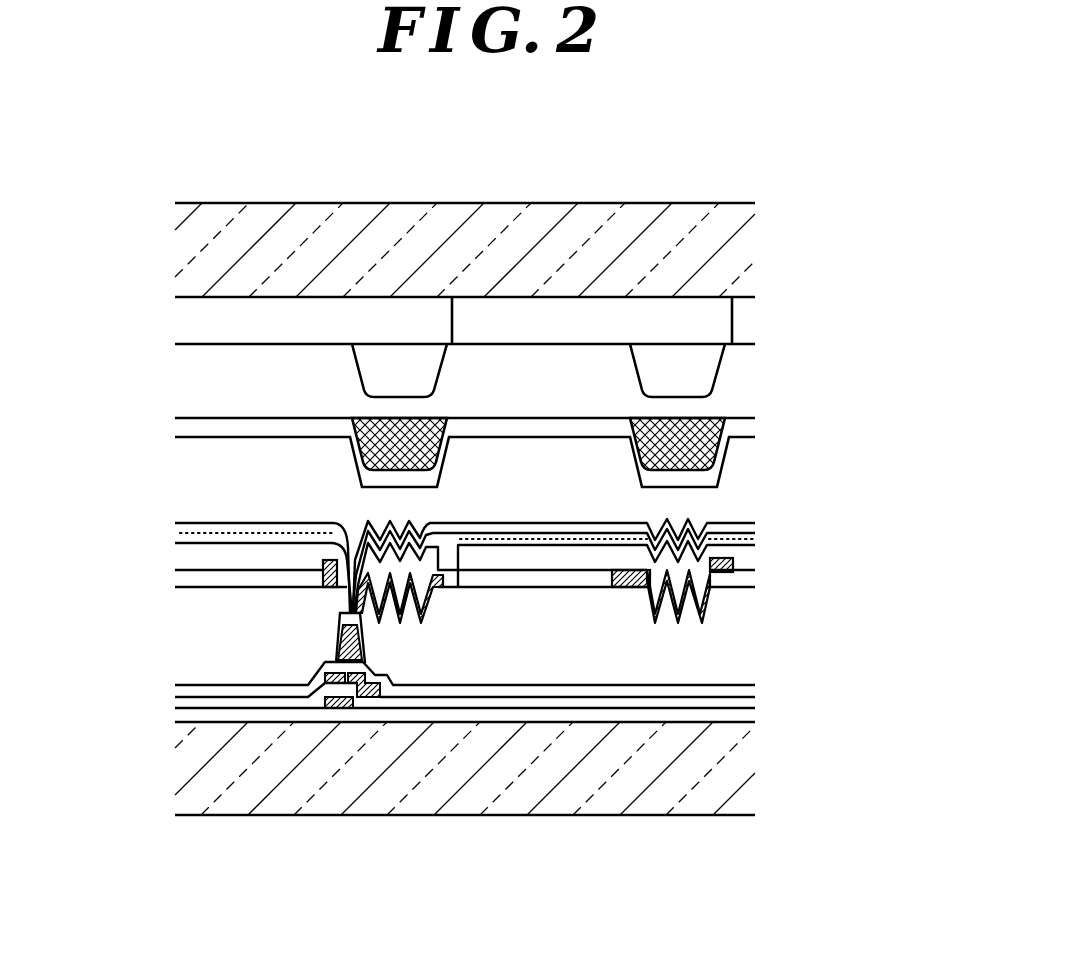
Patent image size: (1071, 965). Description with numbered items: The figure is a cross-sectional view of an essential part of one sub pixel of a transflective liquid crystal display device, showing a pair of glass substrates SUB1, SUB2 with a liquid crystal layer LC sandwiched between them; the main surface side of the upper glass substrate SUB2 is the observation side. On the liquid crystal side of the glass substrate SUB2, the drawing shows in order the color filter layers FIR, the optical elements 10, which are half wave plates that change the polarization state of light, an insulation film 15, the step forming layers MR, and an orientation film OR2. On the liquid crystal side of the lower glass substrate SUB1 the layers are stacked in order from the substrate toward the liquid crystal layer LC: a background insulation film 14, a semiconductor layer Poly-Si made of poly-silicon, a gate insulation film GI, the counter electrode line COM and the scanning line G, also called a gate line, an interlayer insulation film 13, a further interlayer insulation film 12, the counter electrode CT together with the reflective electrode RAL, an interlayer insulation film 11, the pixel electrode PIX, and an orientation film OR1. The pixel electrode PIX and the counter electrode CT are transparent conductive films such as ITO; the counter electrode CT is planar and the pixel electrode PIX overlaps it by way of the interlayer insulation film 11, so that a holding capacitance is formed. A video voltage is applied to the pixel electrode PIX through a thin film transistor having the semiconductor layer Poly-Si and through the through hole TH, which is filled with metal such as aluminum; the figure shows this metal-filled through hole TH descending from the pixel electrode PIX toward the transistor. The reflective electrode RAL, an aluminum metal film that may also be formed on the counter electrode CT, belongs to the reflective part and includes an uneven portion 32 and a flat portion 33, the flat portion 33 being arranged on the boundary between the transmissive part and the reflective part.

The glass substrate SUB2 is at (738, 243).
The color filter layers FIR is at (738, 313).
The optical elements (1/2 wave plates) 10 is at (387, 377).
The insulation film 15 is at (745, 393).
The step forming layers MR is at (642, 418).
The orientation film OR2 is at (745, 424).
The liquid crystal layer LC is at (742, 505).
The orientation film OR1 is at (752, 527).
The pixel electrode PIX is at (187, 537).
The interlayer insulation film 11 is at (193, 557).
The counter electrode CT is at (180, 578).
The flat portion 33 is at (628, 590).
The reflective electrode RAL is at (428, 620).
The uneven portion 32 is at (708, 603).
The interlayer insulation film 12 is at (197, 620).
The through hole TH is at (338, 630).
The interlayer insulation film 13 is at (173, 688).
The gate insulation film GI is at (173, 700).
The counter electrode line COM is at (327, 680).
The scanning line G is at (368, 698).
The semiconductor layer Poly-Si is at (337, 708).
The background insulation film 14 is at (173, 718).
The glass substrate SUB1 is at (738, 770).